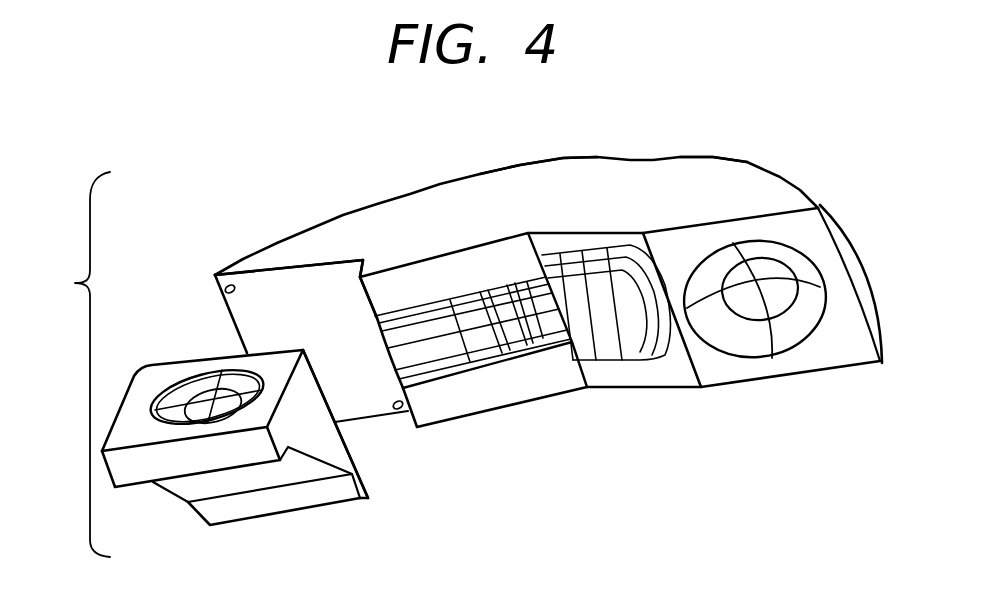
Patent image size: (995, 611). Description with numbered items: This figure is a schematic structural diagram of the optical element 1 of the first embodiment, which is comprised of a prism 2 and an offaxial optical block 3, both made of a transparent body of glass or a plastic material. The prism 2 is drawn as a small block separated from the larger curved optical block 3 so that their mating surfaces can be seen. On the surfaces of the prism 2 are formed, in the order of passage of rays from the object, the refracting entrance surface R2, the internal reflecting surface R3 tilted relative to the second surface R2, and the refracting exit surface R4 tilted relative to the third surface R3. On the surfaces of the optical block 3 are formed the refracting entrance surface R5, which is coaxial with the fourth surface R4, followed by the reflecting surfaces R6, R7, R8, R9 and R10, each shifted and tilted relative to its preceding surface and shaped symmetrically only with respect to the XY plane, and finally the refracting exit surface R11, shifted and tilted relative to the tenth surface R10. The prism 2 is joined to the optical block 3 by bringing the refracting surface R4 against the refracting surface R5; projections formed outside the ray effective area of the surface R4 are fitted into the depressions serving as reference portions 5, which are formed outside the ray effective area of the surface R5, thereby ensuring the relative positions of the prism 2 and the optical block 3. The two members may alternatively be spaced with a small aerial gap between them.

The optical element 1 is at (82, 364).
The prism 2 is at (214, 462).
The optical block 3 is at (418, 210).
The reference portions 5 is at (226, 291).
The second surface R2 is at (208, 422).
The third surface R3 is at (298, 474).
The fourth surface R4 is at (360, 452).
The fifth surface R5 is at (342, 313).
The sixth surface R6 is at (340, 213).
The seventh surface R7 is at (453, 342).
The eighth surface R8 is at (520, 166).
The ninth surface R9 is at (605, 310).
The tenth surface R10 is at (703, 155).
The eleventh surface R11 is at (765, 323).